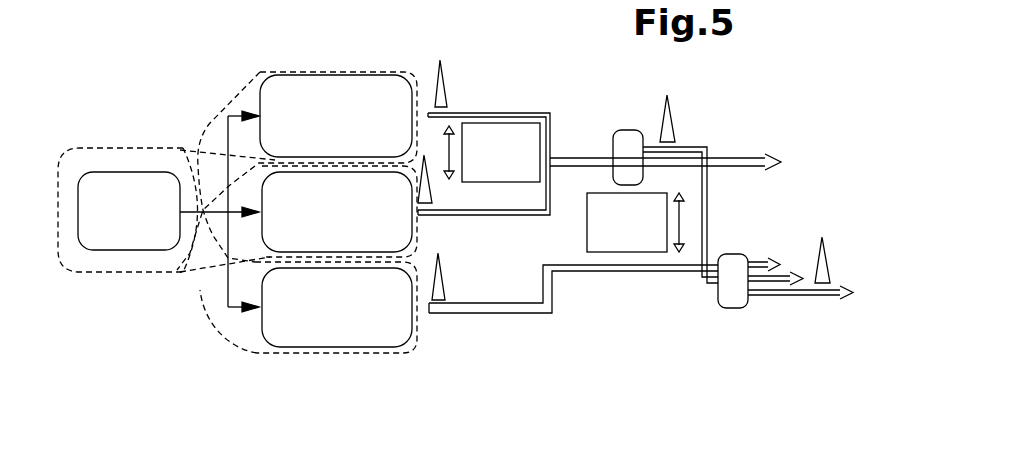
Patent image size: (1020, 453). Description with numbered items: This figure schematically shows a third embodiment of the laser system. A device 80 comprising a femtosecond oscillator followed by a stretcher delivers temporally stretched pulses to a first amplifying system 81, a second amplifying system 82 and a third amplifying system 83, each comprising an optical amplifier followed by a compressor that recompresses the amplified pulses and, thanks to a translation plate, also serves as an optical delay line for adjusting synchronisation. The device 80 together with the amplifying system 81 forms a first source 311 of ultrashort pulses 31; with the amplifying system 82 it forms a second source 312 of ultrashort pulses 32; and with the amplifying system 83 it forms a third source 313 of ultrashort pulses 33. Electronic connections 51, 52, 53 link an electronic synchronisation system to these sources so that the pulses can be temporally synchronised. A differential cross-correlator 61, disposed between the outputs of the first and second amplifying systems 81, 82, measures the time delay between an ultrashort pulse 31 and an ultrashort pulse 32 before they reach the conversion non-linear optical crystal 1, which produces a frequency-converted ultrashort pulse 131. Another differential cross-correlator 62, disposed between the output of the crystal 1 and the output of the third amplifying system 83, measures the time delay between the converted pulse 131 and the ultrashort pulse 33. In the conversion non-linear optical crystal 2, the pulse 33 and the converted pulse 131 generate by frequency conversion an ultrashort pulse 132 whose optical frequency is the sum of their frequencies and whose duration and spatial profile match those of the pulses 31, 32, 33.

The device 80 is at (116, 224).
The first amplifying system 81 is at (322, 129).
The second amplifying system 82 is at (323, 225).
The third amplifying system 83 is at (323, 320).
The electronic connection 51 is at (227, 130).
The electronic connection 52 is at (238, 210).
The electronic connection 53 is at (228, 288).
The first source 311 is at (315, 70).
The second source 312 is at (420, 223).
The third source 313 is at (303, 355).
The ultrashort laser pulse 31 is at (447, 84).
The ultrashort laser pulse 32 is at (433, 192).
The ultrashort laser pulse 33 is at (445, 283).
The differential cross-correlator 61 is at (487, 165).
The differential cross-correlator 62 is at (613, 235).
The conversion non-linear optical crystal 1 is at (633, 130).
The conversion non-linear optical crystal 2 is at (730, 308).
The frequency-converted ultrashort pulse 131 is at (673, 122).
The ultrashort pulse 132 is at (830, 260).